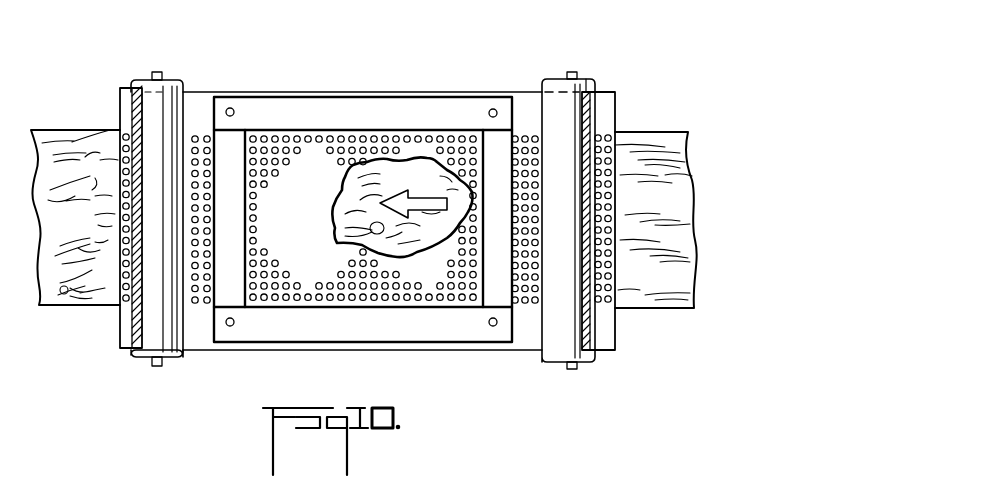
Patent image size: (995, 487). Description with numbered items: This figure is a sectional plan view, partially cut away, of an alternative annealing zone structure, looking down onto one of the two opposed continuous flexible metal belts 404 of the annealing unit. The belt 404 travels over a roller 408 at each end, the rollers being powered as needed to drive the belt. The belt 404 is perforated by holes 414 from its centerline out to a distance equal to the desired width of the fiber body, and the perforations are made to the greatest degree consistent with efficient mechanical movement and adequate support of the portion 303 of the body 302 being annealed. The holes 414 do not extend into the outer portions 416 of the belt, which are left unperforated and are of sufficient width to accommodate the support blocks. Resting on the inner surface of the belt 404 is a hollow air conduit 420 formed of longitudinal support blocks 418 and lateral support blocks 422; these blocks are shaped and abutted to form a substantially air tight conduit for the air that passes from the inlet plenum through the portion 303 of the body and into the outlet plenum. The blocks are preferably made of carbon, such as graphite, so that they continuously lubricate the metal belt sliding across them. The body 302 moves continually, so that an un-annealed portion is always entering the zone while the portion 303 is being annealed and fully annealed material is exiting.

The body 302 is at (92, 239).
The portion of body 303 is at (420, 186).
The continuous flexible metal belt 404 is at (128, 105).
The roller 408 is at (135, 80).
The holes 414 is at (270, 141).
The outer portions of the belts 416 is at (195, 104).
The longitudinal support block 418 is at (347, 113).
The hollow air conduit 420 is at (269, 358).
The lateral support block 422 is at (228, 288).